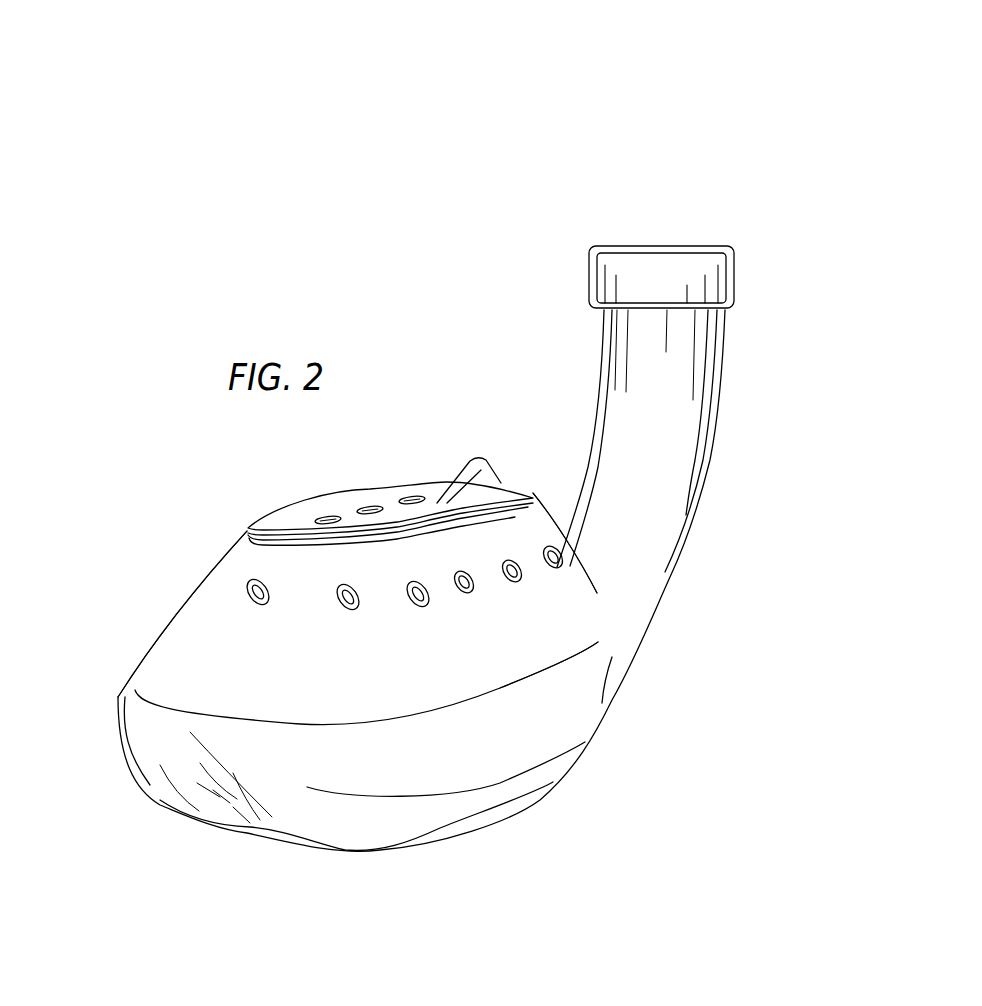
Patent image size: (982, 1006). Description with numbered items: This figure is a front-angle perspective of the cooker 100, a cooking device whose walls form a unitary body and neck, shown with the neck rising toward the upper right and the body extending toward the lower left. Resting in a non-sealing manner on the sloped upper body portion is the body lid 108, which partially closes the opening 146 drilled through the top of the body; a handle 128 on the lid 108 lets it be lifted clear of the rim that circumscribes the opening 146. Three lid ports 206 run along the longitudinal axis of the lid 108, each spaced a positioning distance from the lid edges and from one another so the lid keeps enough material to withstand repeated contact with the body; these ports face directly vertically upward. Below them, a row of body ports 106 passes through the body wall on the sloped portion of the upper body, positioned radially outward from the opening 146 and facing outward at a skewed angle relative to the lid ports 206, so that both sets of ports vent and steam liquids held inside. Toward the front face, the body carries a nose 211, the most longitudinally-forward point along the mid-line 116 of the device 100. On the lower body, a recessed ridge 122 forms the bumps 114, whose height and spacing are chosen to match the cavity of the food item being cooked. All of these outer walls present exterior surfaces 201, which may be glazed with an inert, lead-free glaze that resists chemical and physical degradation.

The cooker 100 is at (455, 62).
The body ports 106 is at (268, 603).
The body lid 108 is at (288, 528).
The bumps 114 is at (217, 857).
The mid-line 116 is at (566, 683).
The recessed ridge 122 is at (220, 797).
The handle 128 is at (486, 460).
The opening 146 is at (525, 485).
The exterior surfaces 201 is at (602, 473).
The lid ports 206 is at (326, 516).
The nose 211 is at (143, 723).